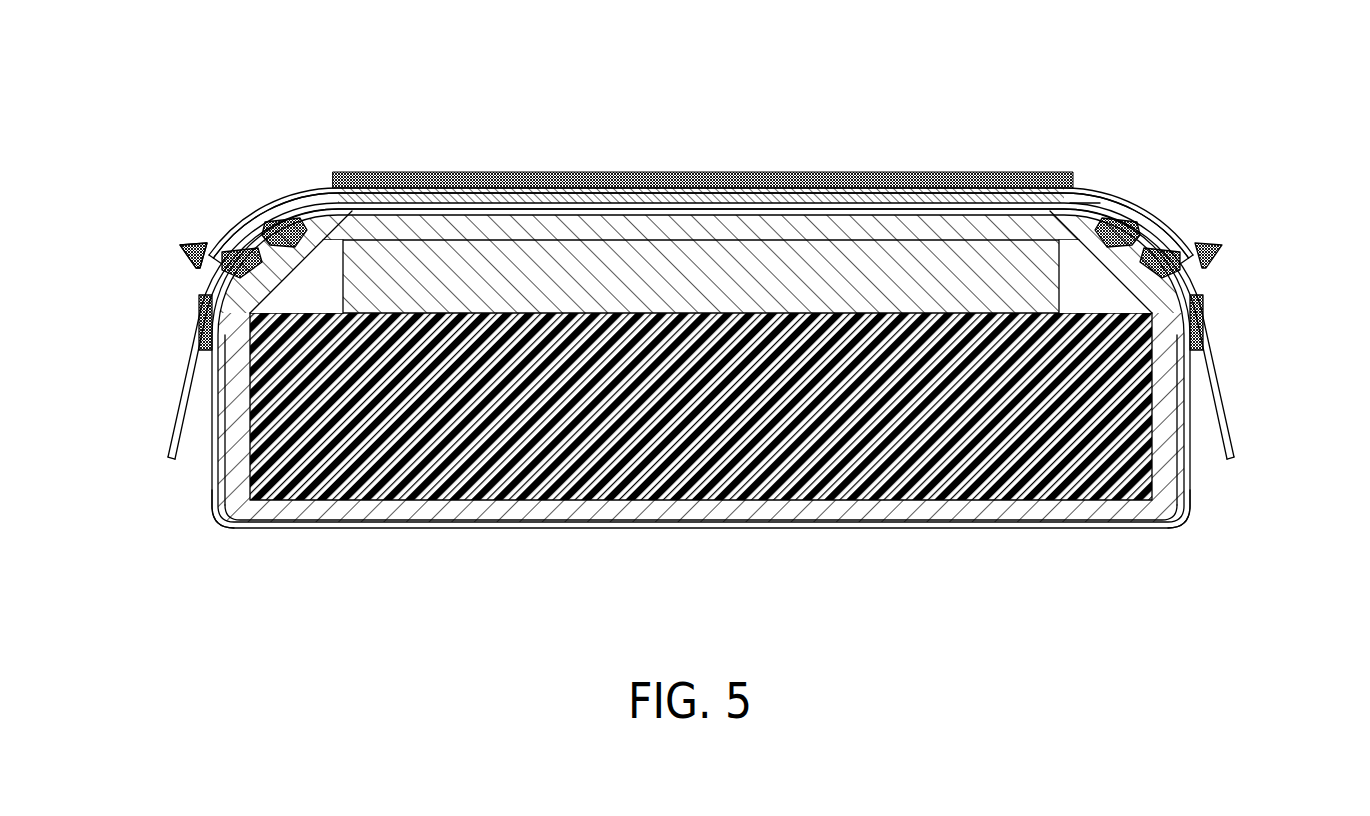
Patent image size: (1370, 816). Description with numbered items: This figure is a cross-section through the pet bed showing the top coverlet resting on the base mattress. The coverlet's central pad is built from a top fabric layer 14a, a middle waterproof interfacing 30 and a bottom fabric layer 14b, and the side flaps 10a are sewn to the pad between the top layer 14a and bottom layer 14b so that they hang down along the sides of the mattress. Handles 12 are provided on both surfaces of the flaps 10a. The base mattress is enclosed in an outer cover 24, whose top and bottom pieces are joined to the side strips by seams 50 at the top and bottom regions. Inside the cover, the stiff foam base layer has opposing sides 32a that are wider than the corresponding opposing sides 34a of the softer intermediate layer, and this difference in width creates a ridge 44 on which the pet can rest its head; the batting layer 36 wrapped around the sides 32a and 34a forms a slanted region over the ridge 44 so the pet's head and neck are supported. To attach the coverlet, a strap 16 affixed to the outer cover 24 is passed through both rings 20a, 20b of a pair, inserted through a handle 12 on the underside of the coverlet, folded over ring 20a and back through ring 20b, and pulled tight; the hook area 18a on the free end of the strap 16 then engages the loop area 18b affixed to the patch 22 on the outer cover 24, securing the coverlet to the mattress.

The side flap 10a is at (168, 420).
The handle 12 is at (188, 244).
The top fabric layer 14a is at (753, 188).
The bottom fabric layer 14b is at (855, 193).
The strap 16 is at (200, 290).
The hook area 18a is at (1269, 315).
The loop area 18b is at (1208, 333).
The ring 20a is at (283, 222).
The ring 20b is at (293, 257).
The patch 22 is at (1195, 402).
The outer cover 24 is at (1088, 203).
The middle waterproof interfacing 30 is at (652, 172).
The opposing side of base layer 32a is at (232, 470).
The opposing side of intermediate layer 34a is at (375, 262).
The batting layer 36 is at (307, 513).
The ridge 44 is at (325, 222).
The seam 50 is at (717, 432).